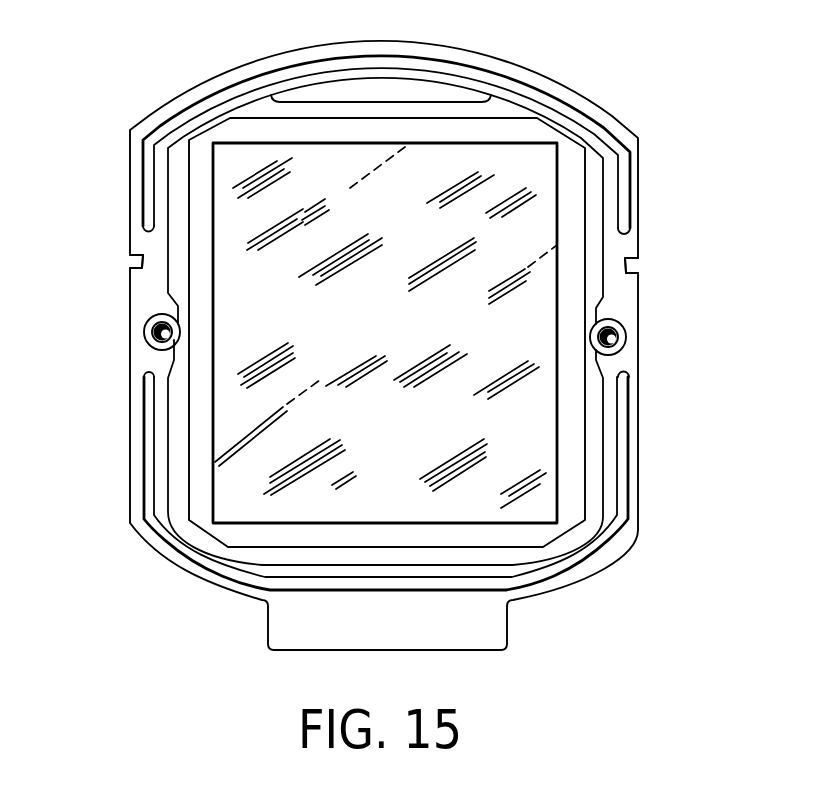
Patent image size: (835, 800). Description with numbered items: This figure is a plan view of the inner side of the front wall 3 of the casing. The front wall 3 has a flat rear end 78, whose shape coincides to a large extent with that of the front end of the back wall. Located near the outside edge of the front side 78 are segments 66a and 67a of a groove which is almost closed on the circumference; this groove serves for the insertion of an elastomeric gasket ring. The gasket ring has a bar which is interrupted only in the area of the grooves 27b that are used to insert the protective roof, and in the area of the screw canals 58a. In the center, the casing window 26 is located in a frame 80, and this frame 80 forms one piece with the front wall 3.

The front wall 3 is at (644, 69).
The casing window 26 is at (533, 168).
The grooves 27b is at (120, 262).
The screw canals 58a is at (147, 331).
The groove segment 66a is at (630, 173).
The groove segment 67a is at (542, 570).
The flat rear end 78 is at (628, 298).
The frame 80 is at (253, 118).